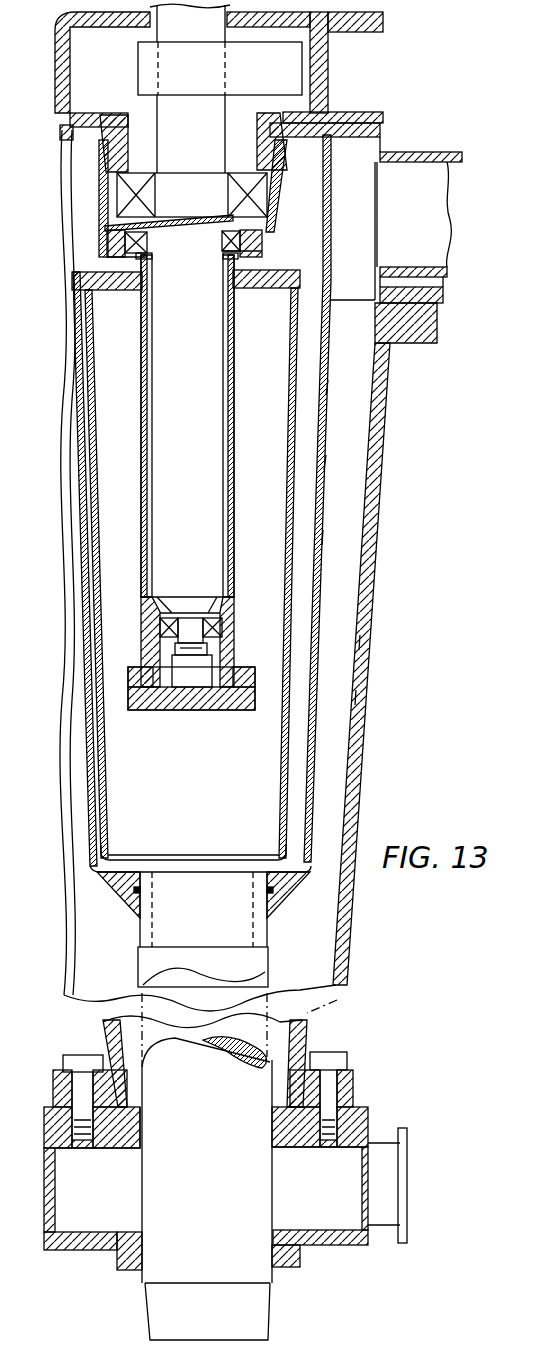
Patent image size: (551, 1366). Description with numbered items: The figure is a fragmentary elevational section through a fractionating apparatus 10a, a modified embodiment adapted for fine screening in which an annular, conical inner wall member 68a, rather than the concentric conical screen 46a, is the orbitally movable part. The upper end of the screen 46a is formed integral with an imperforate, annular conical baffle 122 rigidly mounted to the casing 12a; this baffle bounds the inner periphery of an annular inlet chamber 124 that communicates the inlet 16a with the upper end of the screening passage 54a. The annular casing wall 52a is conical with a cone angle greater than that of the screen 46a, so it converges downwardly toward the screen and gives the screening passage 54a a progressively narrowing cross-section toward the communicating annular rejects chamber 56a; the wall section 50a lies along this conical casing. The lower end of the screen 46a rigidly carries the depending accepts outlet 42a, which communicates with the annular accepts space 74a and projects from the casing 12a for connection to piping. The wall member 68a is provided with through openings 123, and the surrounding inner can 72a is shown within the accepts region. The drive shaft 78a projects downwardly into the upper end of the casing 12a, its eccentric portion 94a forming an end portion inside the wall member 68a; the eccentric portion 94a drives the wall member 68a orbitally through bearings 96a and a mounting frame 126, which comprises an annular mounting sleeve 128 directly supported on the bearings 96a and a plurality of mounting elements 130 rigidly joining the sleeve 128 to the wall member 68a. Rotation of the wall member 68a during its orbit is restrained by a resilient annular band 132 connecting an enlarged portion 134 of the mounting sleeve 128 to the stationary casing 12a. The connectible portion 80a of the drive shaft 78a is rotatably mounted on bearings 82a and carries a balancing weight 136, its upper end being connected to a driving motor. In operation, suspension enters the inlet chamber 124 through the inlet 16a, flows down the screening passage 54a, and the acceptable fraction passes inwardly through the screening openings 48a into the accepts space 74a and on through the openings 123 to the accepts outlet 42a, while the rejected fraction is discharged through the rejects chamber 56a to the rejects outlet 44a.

The fractionating apparatus 10a is at (380, 505).
The casing 12a is at (365, 595).
The inlet 16a is at (405, 152).
The accepts outlet 42a is at (217, 1173).
The rejects outlet 44a is at (393, 1215).
The screen 46a is at (323, 385).
The screening openings 48a is at (320, 462).
The housing lower wall section 50a is at (317, 537).
The casing wall 52a is at (357, 695).
The screening passage 54a is at (340, 640).
The rejects chamber 56a is at (342, 1195).
The inner wall member 68a is at (107, 820).
The inner can 72a is at (304, 720).
The accepts space 74a is at (297, 835).
The drive shaft 78a is at (228, 408).
The connectible portion 80a is at (206, 138).
The bearings 82a is at (245, 190).
The eccentric portion 94a is at (205, 578).
The bearings 96a is at (145, 234).
The baffle 122 is at (330, 180).
The openings 123 is at (290, 530).
The inlet chamber 124 is at (357, 233).
The mounting frame 126 is at (139, 506).
The mounting sleeve 128 is at (262, 598).
The mounting elements 130 is at (248, 280).
The resilient annular band 132 is at (100, 194).
The enlarged portion 134 is at (112, 262).
The balancing weight 136 is at (282, 66).